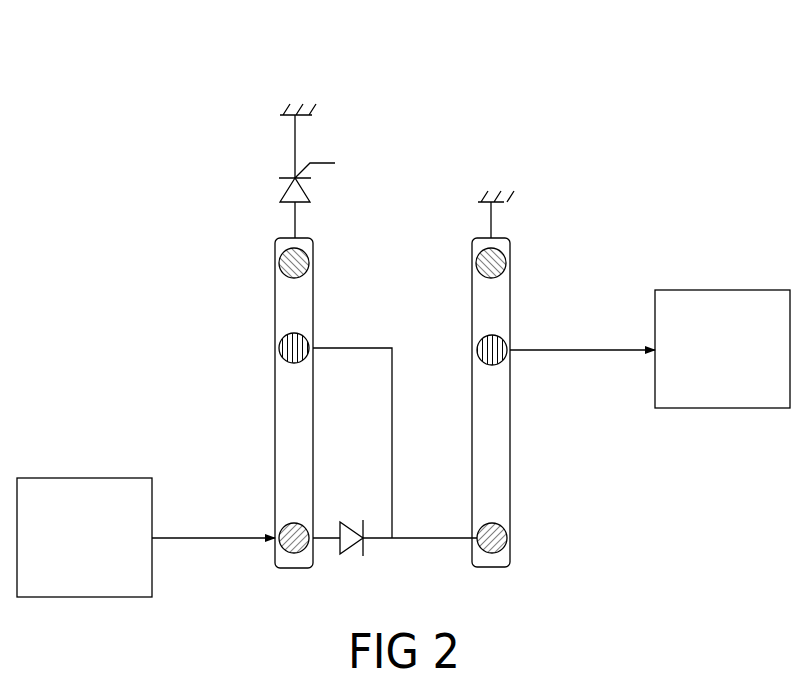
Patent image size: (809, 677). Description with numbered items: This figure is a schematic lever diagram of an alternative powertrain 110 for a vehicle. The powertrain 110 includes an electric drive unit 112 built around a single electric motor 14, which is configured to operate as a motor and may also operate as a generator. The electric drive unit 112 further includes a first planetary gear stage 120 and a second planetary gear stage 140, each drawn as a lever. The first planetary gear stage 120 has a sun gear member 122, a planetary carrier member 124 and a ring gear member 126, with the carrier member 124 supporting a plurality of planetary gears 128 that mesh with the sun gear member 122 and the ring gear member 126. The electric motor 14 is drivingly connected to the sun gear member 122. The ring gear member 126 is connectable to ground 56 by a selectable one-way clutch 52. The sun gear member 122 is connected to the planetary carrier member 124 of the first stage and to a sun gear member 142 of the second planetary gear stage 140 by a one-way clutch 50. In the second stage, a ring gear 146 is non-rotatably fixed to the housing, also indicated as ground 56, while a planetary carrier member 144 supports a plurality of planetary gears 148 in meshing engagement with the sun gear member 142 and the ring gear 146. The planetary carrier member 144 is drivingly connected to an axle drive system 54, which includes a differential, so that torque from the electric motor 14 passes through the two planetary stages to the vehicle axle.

The electric motor 14 is at (72, 550).
The one-way clutch 50 is at (353, 548).
The selectable one-way clutch 52 is at (287, 193).
The axle drive system 54 is at (709, 362).
The ground 56 is at (295, 110).
The powertrain 110 is at (638, 177).
The electric drive unit 112 is at (637, 495).
The first planetary gear stage 120 is at (255, 88).
The sun gear member 122 is at (283, 553).
The planetary carrier member 124 is at (352, 348).
The ring gear member 126 is at (282, 254).
The planetary gears 128 is at (282, 358).
The second planetary gear stage 140 is at (515, 182).
The sun gear member 142 is at (500, 550).
The planetary carrier member 144 is at (583, 348).
The ring gear 146 is at (500, 253).
The planetary gears 148 is at (500, 363).